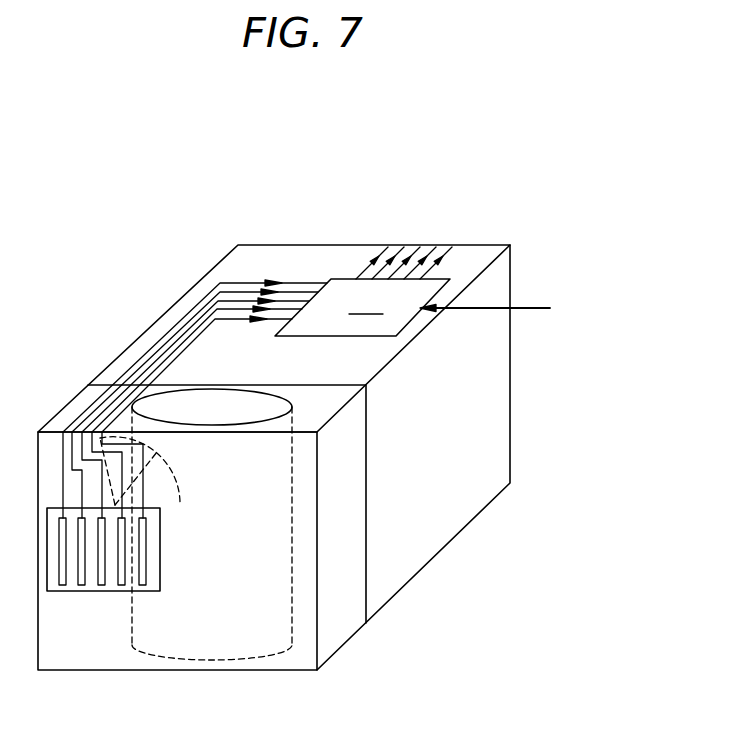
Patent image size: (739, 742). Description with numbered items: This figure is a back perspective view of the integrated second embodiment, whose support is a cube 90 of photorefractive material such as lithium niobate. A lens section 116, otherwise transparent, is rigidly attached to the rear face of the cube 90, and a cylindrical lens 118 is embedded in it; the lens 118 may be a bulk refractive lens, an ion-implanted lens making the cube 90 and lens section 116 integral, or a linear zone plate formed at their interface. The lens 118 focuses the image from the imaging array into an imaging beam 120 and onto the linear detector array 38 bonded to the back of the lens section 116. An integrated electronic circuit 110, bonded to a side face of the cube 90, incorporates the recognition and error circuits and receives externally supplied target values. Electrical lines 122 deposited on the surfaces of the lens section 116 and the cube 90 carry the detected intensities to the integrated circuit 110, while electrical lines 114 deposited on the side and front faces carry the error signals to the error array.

The cube 90 is at (445, 513).
The lens section 116 is at (345, 615).
The integrated electronic circuit 110 is at (446, 307).
The electrical lines 114 is at (365, 272).
The electrical lines 122 is at (298, 283).
The linear detector array 38 is at (96, 585).
The cylindrical lens 118 is at (213, 400).
The imaging beam 120 is at (186, 503).